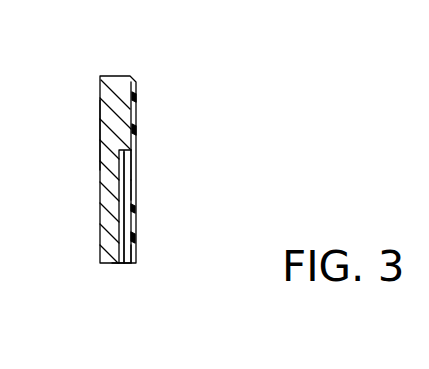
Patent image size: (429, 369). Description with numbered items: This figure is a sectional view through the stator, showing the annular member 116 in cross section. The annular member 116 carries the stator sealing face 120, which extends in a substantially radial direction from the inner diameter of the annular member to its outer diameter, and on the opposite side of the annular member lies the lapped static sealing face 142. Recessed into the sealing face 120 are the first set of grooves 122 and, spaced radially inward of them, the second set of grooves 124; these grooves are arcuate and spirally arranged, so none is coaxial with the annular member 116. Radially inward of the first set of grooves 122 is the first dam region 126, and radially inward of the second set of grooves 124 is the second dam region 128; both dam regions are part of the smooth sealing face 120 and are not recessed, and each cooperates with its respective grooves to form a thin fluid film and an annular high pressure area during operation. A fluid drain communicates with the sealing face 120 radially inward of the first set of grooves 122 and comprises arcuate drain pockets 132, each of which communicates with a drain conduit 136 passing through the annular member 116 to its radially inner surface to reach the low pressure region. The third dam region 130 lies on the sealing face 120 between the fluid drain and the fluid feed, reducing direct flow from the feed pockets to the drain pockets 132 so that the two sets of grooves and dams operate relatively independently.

The annular member 116 is at (113, 77).
The sealing face 120 is at (137, 263).
The first set of grooves 122 is at (138, 125).
The second set of grooves 124 is at (137, 243).
The first dam region 126 is at (137, 158).
The second dam region 128 is at (137, 255).
The third dam region 130 is at (137, 187).
The arcuate drain pockets 132 is at (137, 170).
The drain conduit 136 is at (121, 264).
The lapped static sealing face 142 is at (100, 133).